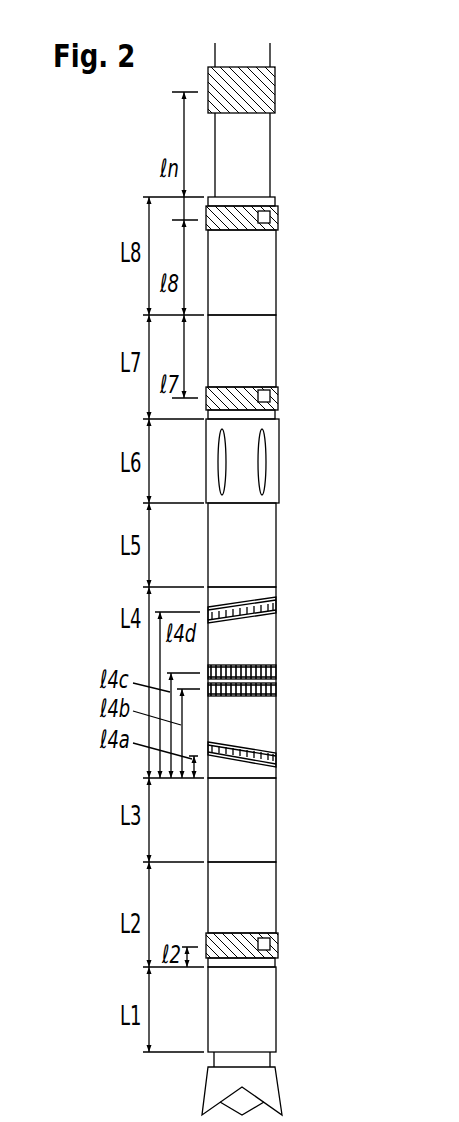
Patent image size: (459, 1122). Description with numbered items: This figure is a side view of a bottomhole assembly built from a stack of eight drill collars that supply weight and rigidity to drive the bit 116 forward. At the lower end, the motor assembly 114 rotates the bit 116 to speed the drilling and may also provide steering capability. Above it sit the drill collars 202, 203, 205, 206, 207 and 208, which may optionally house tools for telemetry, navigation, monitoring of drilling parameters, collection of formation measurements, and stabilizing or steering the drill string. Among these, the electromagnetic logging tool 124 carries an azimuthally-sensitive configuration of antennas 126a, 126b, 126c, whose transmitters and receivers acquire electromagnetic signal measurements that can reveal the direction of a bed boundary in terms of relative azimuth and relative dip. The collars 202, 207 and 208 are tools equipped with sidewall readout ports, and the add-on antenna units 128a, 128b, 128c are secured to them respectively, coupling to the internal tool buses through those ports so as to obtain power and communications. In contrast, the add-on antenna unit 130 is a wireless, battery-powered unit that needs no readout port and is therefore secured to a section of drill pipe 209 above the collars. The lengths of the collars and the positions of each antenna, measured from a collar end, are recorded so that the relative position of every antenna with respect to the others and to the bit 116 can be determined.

The add-on antenna unit 130 is at (275, 100).
The drill pipe 209 is at (270, 180).
The add-on antenna unit 128c is at (280, 213).
The drill collar 208 is at (276, 263).
The drill collar 207 is at (276, 345).
The add-on antenna unit 128b is at (278, 397).
The drill collar 206 is at (279, 458).
The drill collar 205 is at (276, 541).
The electromagnetic logging tool 124 is at (276, 638).
The antenna 126a is at (276, 602).
The antenna 126c is at (276, 673).
The antenna 126b is at (276, 763).
The drill collar 203 is at (276, 823).
The drill collar 202 is at (276, 897).
The add-on antenna unit 128a is at (278, 945).
The motor assembly 114 is at (276, 995).
The bit 116 is at (282, 1085).